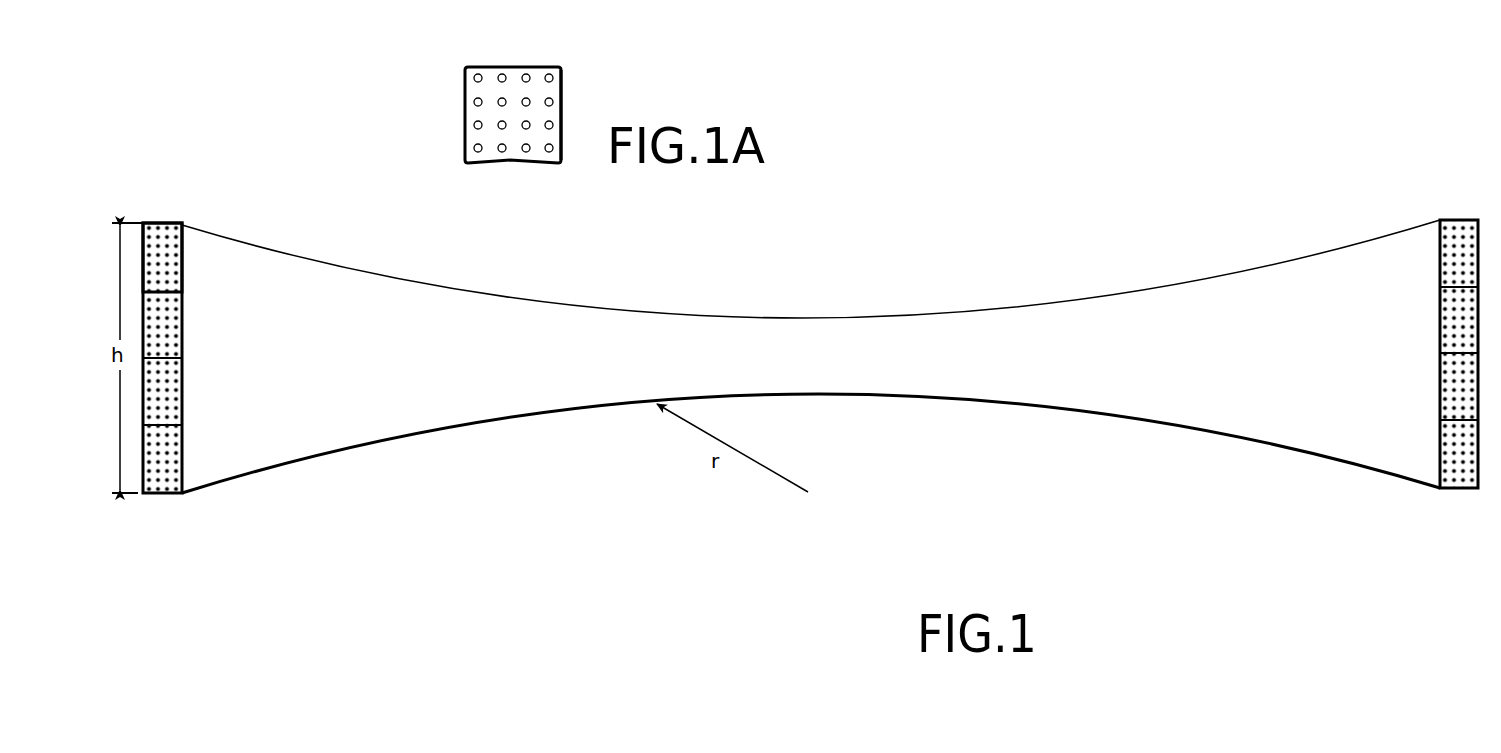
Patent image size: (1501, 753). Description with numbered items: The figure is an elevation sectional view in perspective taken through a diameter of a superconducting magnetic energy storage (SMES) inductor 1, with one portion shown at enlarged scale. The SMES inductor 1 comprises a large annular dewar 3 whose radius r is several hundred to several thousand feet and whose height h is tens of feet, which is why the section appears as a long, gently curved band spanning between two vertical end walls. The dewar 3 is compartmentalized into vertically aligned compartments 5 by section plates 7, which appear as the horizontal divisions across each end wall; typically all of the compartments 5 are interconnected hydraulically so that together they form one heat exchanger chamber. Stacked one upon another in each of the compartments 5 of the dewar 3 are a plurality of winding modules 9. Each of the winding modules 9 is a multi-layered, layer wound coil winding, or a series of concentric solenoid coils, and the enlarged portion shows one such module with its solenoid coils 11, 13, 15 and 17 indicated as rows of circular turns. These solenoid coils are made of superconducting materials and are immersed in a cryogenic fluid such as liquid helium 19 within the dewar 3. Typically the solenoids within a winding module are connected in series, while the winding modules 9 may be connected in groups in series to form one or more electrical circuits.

In FIG. 1, the SMES inductor 1 is at (970, 272).
In FIG. 1, the annular dewar 3 is at (1188, 282).
In FIG. 1, the compartments 5 is at (180, 248).
In FIG. 1, the section plates 7 is at (182, 425).
In FIG. 1A, the winding modules 9 is at (443, 73).
In FIG. 1, the winding modules 9 is at (143, 256).
In FIG. 1A, the solenoid coil 11 is at (478, 72).
In FIG. 1A, the solenoid coil 13 is at (502, 72).
In FIG. 1A, the solenoid coil 15 is at (526, 72).
In FIG. 1A, the solenoid coil 17 is at (549, 72).
In FIG. 1A, the liquid helium 19 is at (561, 112).